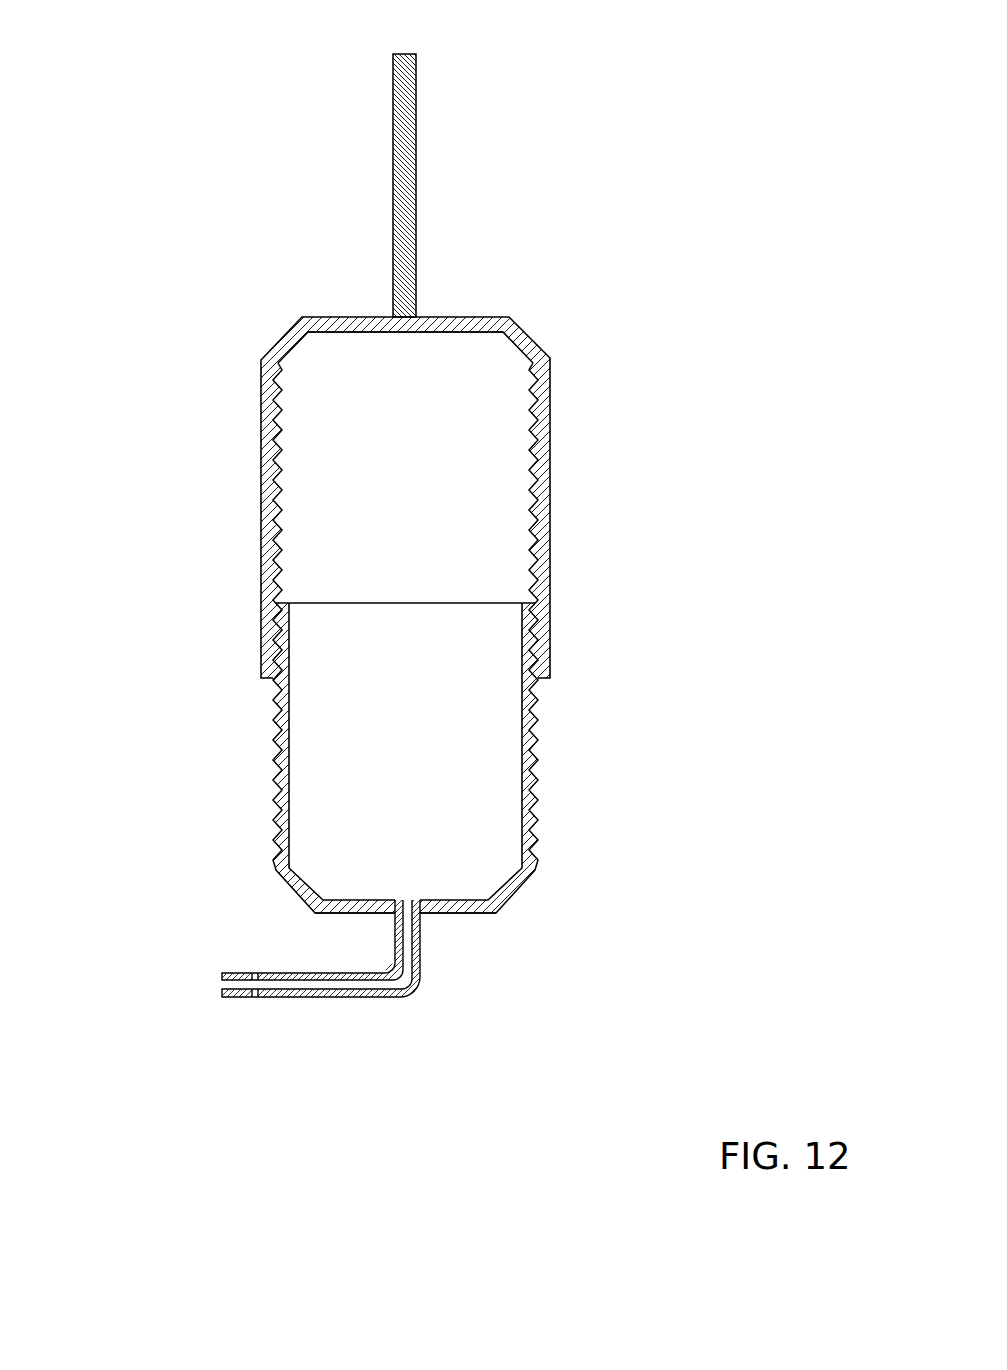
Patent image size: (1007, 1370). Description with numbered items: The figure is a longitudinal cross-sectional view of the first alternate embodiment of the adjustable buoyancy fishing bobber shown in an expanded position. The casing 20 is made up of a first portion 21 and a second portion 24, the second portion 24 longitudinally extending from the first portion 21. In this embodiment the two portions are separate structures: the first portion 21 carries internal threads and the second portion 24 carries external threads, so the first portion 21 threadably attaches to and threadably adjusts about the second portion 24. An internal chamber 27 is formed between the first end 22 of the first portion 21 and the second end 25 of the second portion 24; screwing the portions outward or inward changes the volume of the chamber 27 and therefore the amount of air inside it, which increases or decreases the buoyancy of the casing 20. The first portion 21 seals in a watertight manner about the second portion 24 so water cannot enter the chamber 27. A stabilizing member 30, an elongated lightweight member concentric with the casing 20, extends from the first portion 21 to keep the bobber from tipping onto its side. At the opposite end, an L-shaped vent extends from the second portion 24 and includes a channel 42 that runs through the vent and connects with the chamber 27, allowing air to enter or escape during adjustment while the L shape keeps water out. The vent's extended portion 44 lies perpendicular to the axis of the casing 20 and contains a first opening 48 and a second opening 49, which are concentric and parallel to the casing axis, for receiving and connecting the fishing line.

The casing 20 is at (381, 607).
The first portion 21 is at (261, 405).
The first end 22 is at (455, 317).
The second portion 24 is at (275, 768).
The second end 25 is at (482, 915).
The chamber 27 is at (457, 535).
The stabilizing member 30 is at (416, 125).
The channel 42 is at (417, 985).
The extended portion 44 is at (228, 997).
The first opening 48 is at (257, 973).
The second opening 49 is at (255, 997).